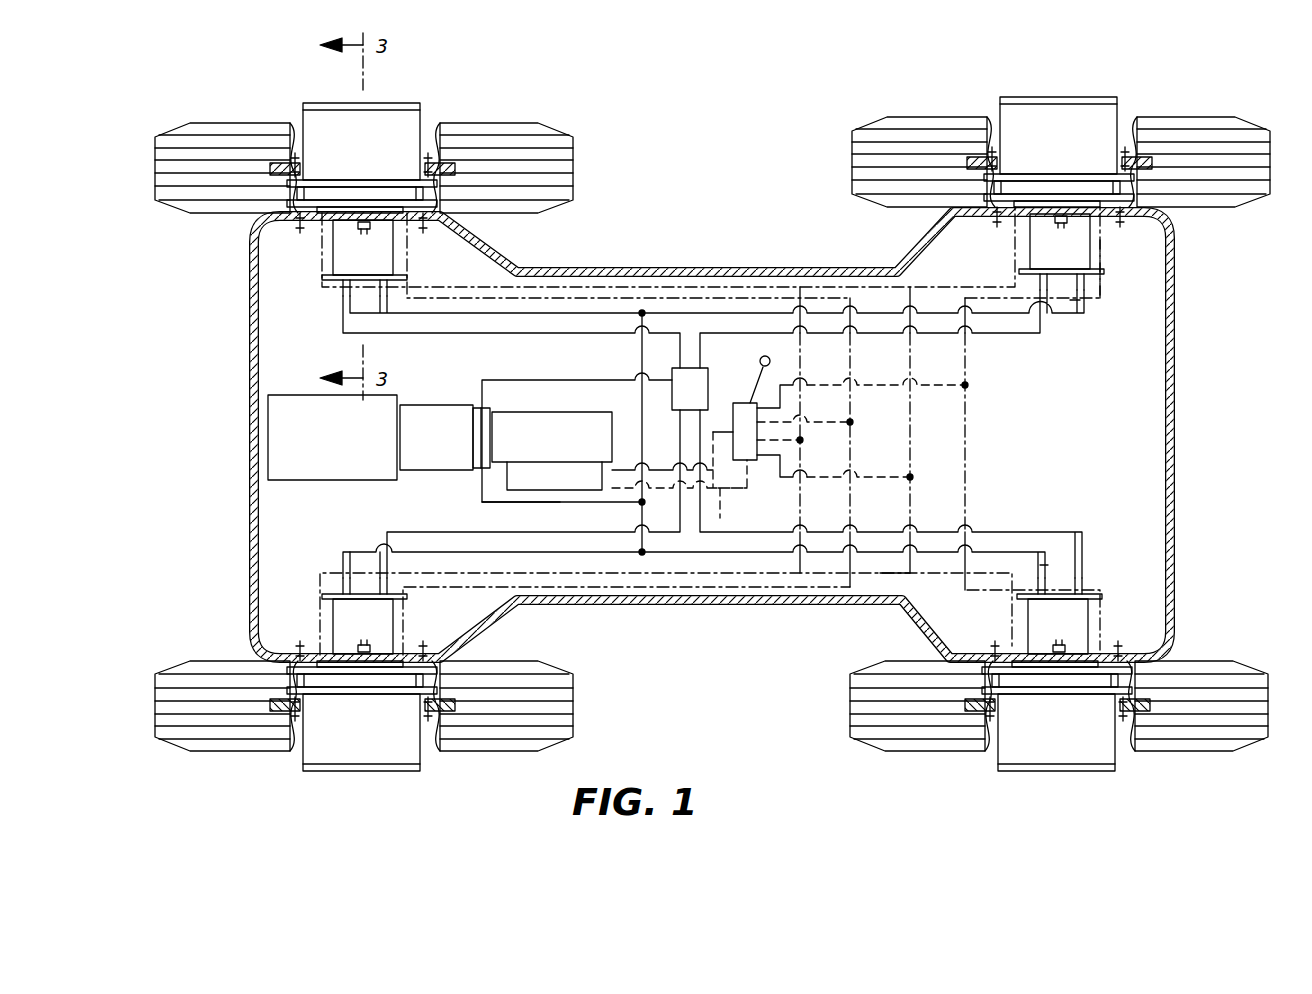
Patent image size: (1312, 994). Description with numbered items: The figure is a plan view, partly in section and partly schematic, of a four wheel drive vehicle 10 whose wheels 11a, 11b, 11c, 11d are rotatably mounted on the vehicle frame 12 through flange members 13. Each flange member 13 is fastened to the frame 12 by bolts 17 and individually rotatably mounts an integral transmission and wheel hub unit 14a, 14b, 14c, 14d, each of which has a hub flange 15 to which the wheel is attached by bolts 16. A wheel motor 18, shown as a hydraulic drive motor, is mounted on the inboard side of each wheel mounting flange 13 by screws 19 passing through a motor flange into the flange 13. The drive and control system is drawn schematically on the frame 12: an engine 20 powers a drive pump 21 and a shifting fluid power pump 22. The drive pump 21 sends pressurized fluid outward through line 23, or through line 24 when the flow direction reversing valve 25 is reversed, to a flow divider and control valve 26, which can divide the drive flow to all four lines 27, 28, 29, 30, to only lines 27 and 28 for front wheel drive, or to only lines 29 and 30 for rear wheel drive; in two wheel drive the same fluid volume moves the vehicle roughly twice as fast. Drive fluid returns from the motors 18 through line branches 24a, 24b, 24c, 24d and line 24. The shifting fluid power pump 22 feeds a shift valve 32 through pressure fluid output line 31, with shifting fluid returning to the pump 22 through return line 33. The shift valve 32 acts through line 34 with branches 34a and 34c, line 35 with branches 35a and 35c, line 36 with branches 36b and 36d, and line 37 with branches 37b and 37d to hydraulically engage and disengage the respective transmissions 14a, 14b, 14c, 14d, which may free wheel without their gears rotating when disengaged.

The four wheel drive vehicle 10 is at (122, 114).
The wheel 11a is at (185, 128).
The wheel 11b is at (1232, 128).
The wheel 11c is at (182, 658).
The wheel 11d is at (1226, 656).
The vehicle frame 12 is at (250, 340).
The flange member 13 is at (334, 194).
The integral transmission and wheel hub unit 14a is at (403, 104).
The integral transmission and wheel hub unit 14b is at (1075, 100).
The integral transmission and wheel hub unit 14c is at (378, 780).
The integral transmission and wheel hub unit 14d is at (1062, 780).
The hub flange 15 is at (364, 178).
The bolts 16 is at (293, 150).
The bolts 17 is at (300, 230).
The wheel motor 18 is at (369, 268).
The screws 19 is at (378, 232).
The engine 20 is at (268, 438).
The drive pump 21 is at (420, 476).
The shifting fluid power pump 22 is at (581, 412).
The line 23 is at (565, 380).
The line 24 is at (538, 504).
The line branch 24a is at (400, 316).
The line branch 24b is at (1072, 318).
The line branch 24c is at (350, 550).
The line branch 24d is at (1048, 568).
The flow direction reversing valve 25 is at (490, 406).
The flow divider and control valve 26 is at (708, 388).
The line 27 is at (512, 336).
The line 28 is at (427, 532).
The line 29 is at (1005, 336).
The line 30 is at (1020, 530).
The pressure fluid output line 31 is at (600, 484).
The shift valve 32 is at (749, 462).
The shifting fluid return line 33 is at (721, 512).
The line 34 is at (836, 418).
The line branch 34a is at (622, 296).
The line branch 34c is at (553, 612).
The line 35 is at (802, 444).
The line branch 35a is at (726, 286).
The line branch 35c is at (672, 614).
The line 36 is at (886, 382).
The line branch 36b is at (1098, 284).
The line branch 36d is at (992, 596).
The line 37 is at (897, 504).
The line branch 37b is at (910, 296).
The line branch 37d is at (914, 580).